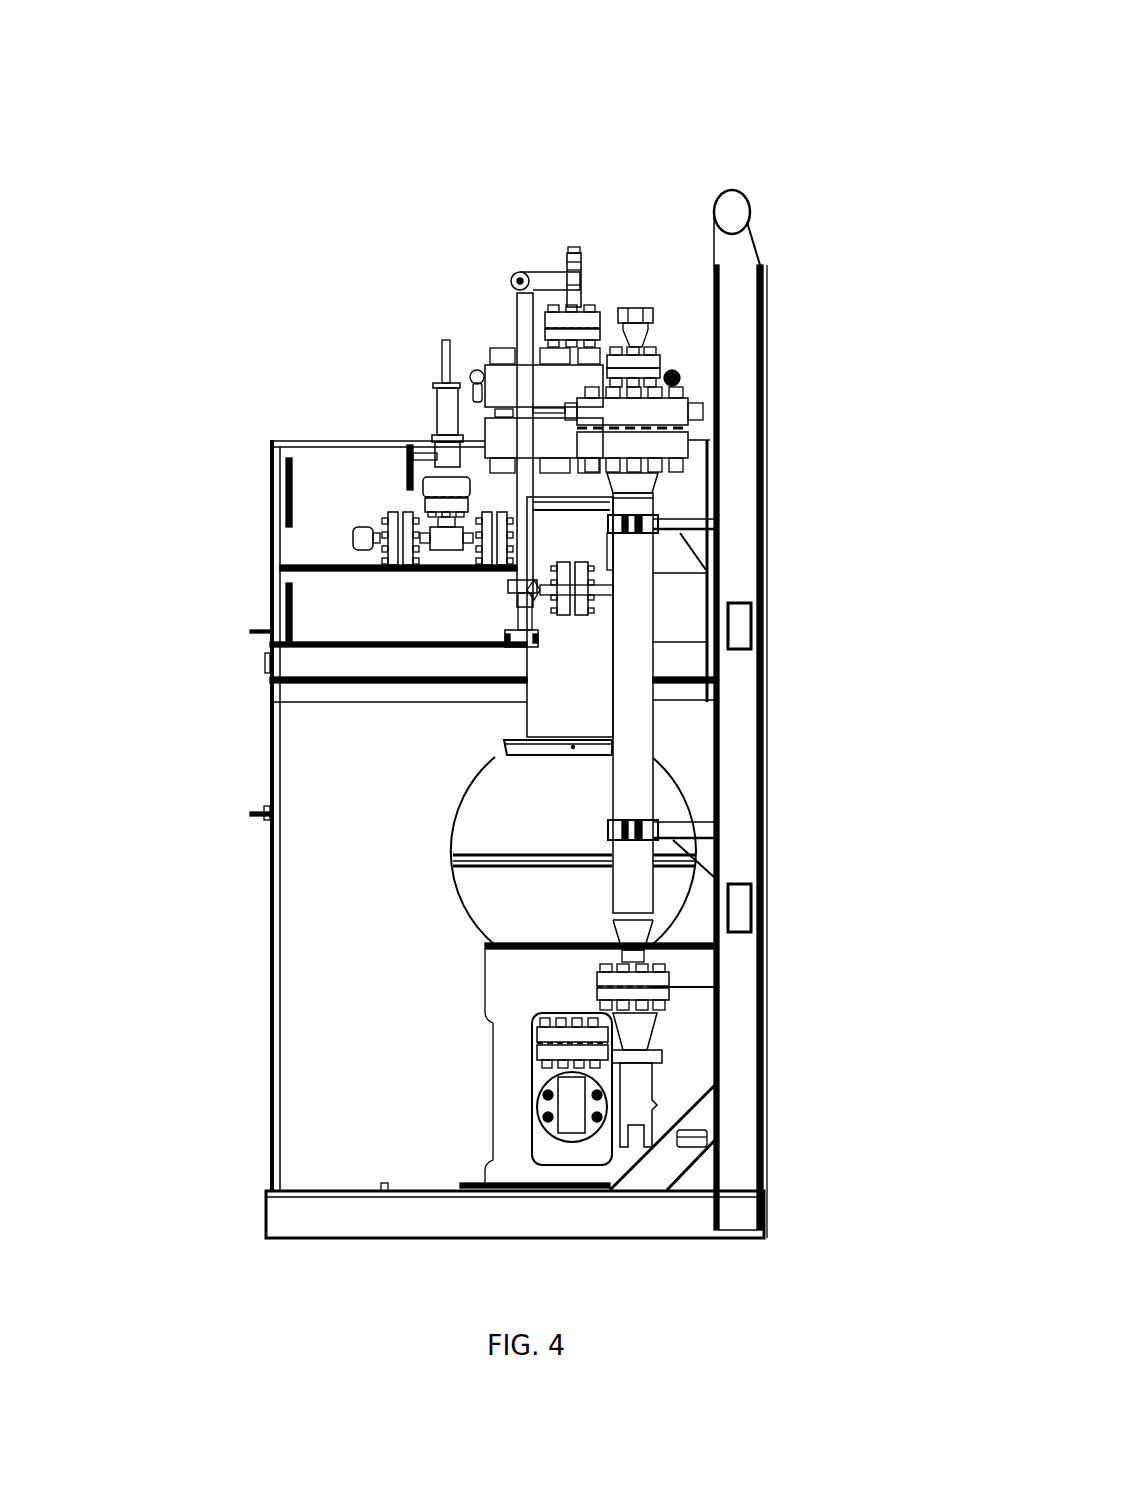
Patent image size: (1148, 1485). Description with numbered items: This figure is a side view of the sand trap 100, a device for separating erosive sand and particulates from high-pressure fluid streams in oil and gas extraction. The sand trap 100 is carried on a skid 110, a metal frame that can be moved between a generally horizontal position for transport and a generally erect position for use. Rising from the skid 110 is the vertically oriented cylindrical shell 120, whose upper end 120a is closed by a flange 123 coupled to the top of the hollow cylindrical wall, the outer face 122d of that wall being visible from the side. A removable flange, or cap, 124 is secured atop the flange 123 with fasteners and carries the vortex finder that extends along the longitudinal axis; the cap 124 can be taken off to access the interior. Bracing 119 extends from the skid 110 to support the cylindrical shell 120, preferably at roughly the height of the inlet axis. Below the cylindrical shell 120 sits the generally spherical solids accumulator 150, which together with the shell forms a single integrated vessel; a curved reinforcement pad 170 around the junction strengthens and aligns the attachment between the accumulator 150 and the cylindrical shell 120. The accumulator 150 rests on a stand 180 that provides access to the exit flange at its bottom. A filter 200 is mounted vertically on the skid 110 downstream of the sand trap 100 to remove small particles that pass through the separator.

The sand trap 100 is at (462, 195).
The skid 110 is at (765, 228).
The bracing 119 is at (680, 555).
The cylindrical shell 120 is at (557, 687).
The upper end of cylindrical shell 120a is at (478, 413).
The outer face of hollow cylindrical wall 122d is at (570, 667).
The flange 123 is at (507, 440).
The flange (cap) 124 is at (497, 380).
The solids accumulator 150 is at (562, 900).
The reinforcement pad 170 is at (530, 760).
The stand 180 is at (510, 1110).
The filter 200 is at (657, 717).